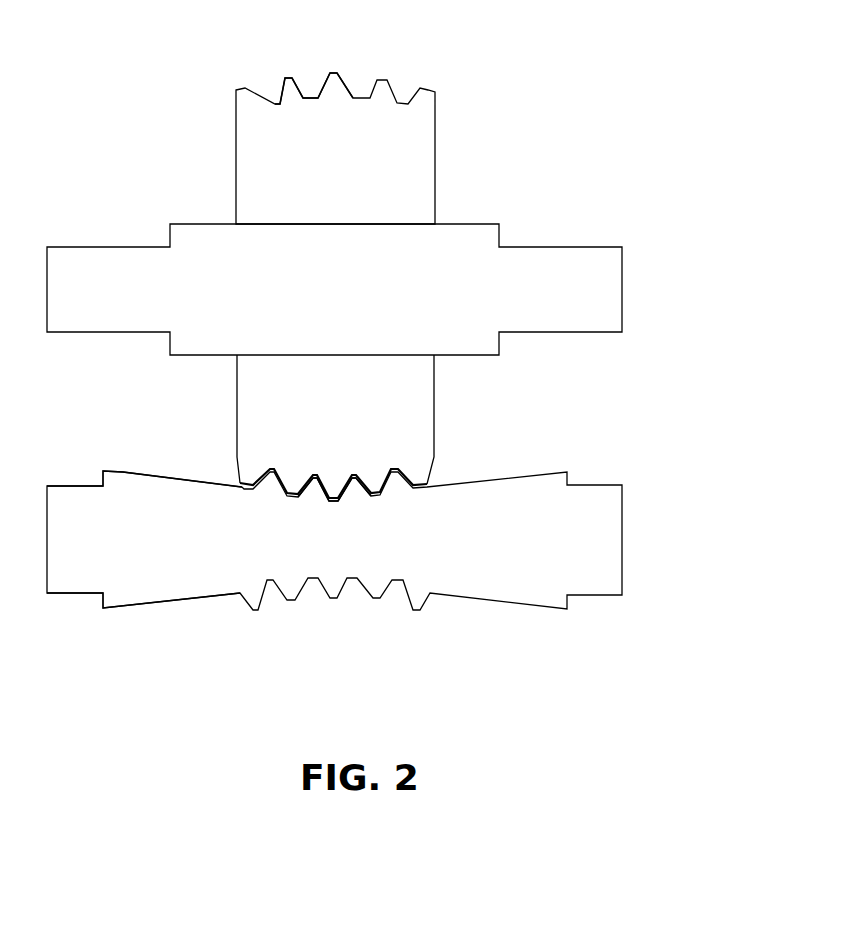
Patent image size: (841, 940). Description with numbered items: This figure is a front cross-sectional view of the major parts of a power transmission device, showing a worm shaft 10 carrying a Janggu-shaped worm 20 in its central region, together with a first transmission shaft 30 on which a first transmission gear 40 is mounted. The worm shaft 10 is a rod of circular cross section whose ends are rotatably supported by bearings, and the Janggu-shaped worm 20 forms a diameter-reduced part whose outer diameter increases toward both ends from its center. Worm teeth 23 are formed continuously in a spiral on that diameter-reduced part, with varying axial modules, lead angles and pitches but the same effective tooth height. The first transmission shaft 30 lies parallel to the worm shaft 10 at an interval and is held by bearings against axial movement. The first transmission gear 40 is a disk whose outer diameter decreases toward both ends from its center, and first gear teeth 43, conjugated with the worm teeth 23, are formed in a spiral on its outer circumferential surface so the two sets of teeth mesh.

The worm shaft 10 is at (646, 548).
The Janggu-shaped worm 20 is at (156, 622).
The worm teeth 23 is at (352, 490).
The first transmission shaft 30 is at (91, 228).
The first transmission gear 40 is at (456, 137).
The first gear teeth 43 is at (332, 73).